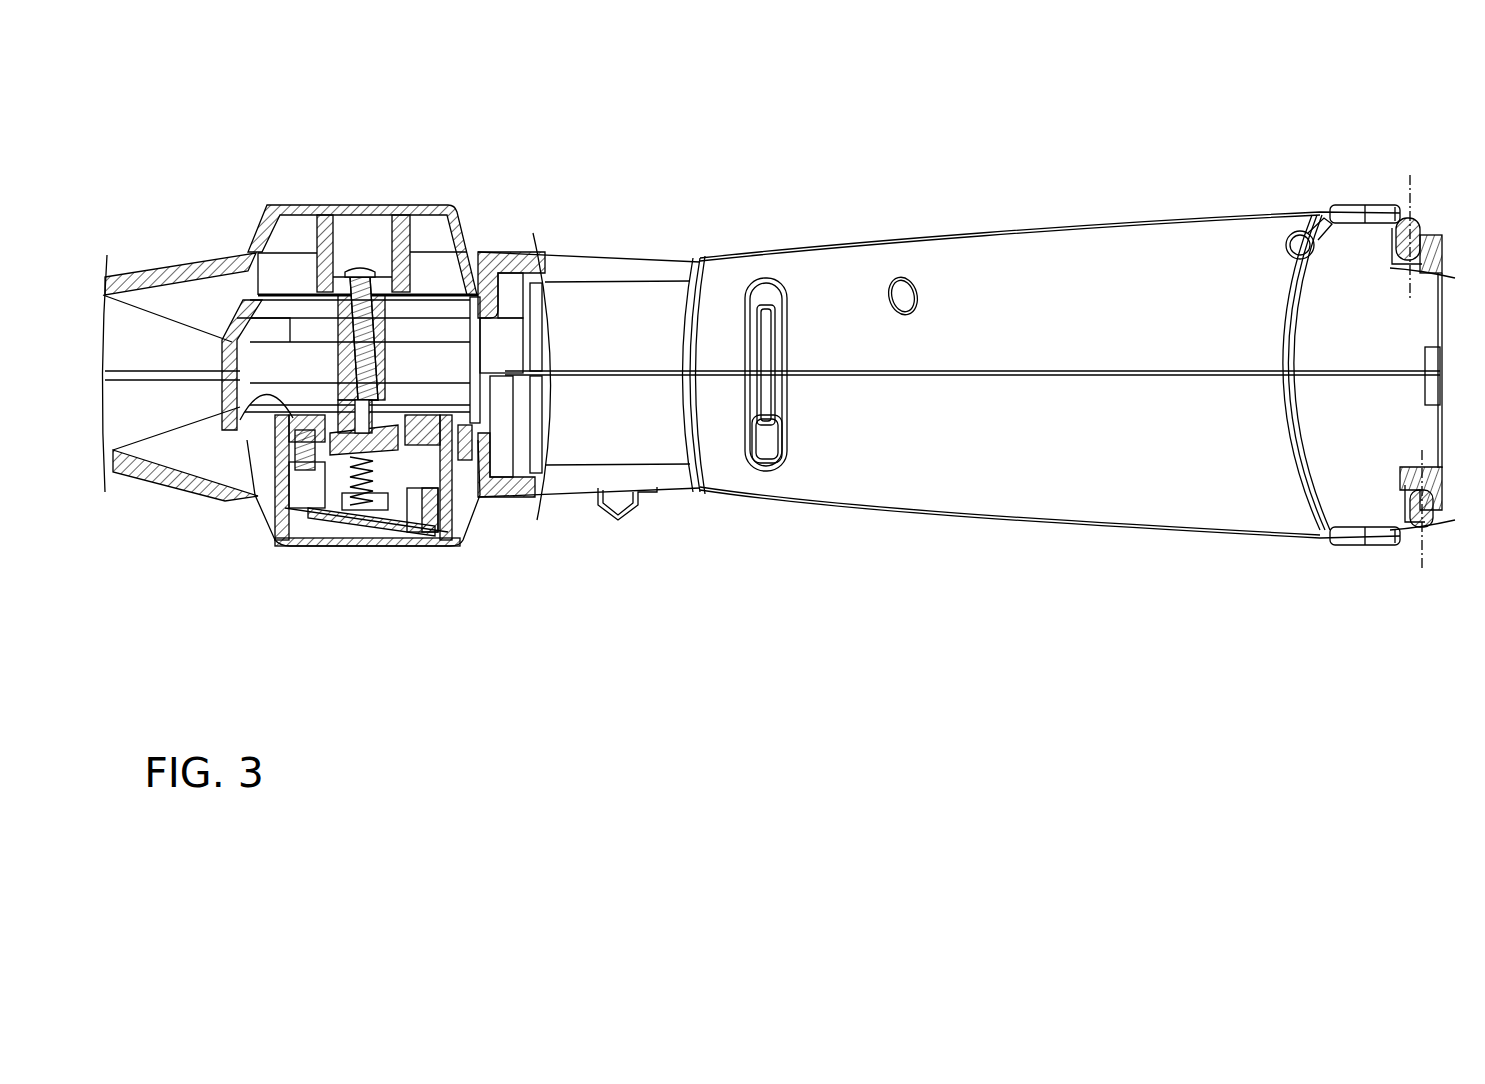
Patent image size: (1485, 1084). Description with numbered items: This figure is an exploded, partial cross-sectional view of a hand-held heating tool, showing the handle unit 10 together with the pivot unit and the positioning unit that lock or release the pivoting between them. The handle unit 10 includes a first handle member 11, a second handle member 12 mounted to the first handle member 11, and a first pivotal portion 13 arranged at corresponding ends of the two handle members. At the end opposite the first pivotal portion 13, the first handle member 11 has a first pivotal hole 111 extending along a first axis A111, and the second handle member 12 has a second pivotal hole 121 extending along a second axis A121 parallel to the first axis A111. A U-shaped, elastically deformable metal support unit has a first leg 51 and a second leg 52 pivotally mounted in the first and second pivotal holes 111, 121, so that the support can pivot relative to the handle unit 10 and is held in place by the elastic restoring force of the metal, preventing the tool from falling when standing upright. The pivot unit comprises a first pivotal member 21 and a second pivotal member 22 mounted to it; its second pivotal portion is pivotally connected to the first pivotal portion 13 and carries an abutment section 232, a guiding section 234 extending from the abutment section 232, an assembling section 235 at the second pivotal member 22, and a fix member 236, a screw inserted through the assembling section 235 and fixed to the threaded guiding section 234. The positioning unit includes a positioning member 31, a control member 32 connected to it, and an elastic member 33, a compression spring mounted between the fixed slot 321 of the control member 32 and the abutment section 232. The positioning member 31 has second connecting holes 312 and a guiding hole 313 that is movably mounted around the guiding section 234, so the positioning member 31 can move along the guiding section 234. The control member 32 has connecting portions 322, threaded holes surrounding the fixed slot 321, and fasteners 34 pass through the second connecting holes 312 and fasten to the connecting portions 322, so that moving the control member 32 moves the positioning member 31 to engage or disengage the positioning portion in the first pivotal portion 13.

The handle unit 10 is at (838, 218).
The first handle member 11 is at (998, 495).
The second handle member 12 is at (1036, 262).
The first pivotal portion 13 is at (489, 238).
The first pivotal member 21 is at (153, 473).
The second pivotal member 22 is at (213, 263).
The positioning member 31 is at (500, 480).
The control member 32 is at (385, 505).
The elastic member 33 is at (353, 463).
The fasteners 34 is at (305, 480).
The first leg 51 is at (1405, 540).
The second leg 52 is at (1403, 213).
The first pivotal hole 111 is at (1433, 540).
The second pivotal hole 121 is at (1421, 218).
The abutment section 232 is at (455, 490).
The guiding section 234 is at (412, 300).
The assembling section 235 is at (337, 270).
The fix member 236 is at (368, 268).
The second connecting holes 312 is at (258, 445).
The guiding hole 313 is at (420, 500).
The fixed slot 321 is at (365, 507).
The connecting portions 322 is at (268, 510).
The first axis A111 is at (1422, 570).
The second axis A121 is at (1410, 177).